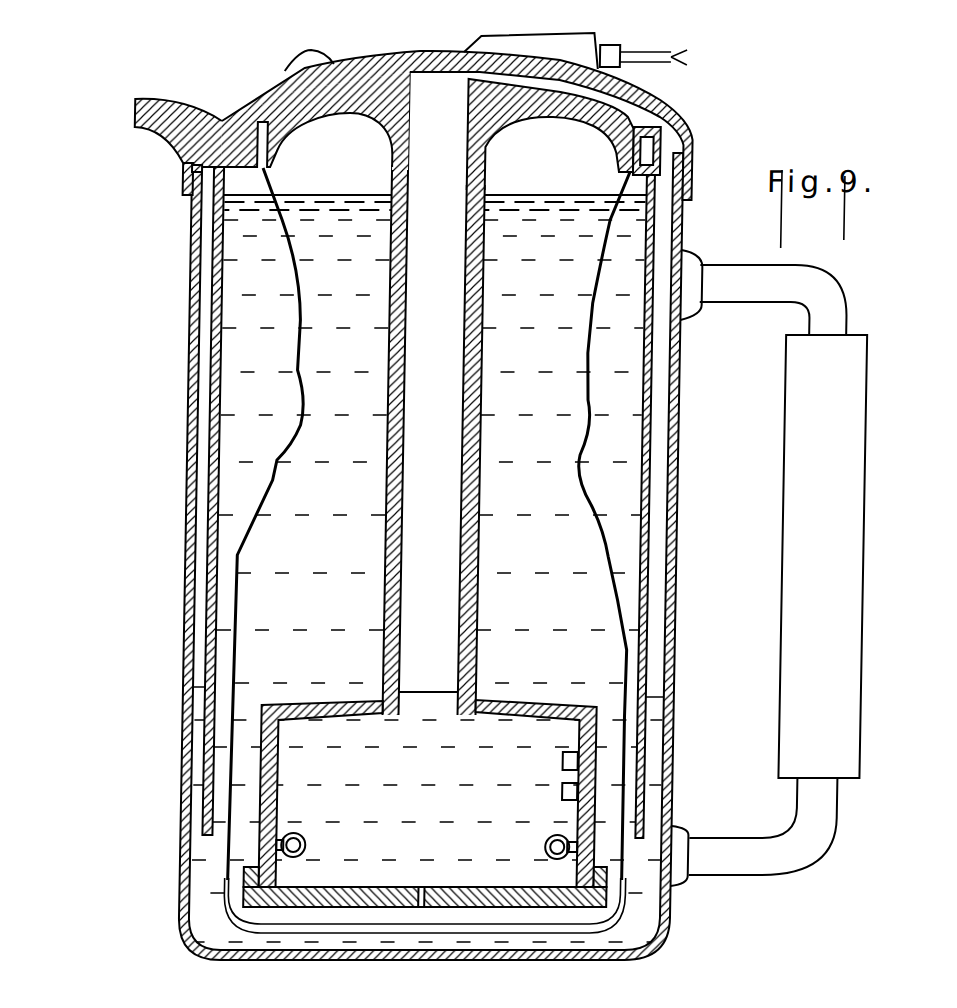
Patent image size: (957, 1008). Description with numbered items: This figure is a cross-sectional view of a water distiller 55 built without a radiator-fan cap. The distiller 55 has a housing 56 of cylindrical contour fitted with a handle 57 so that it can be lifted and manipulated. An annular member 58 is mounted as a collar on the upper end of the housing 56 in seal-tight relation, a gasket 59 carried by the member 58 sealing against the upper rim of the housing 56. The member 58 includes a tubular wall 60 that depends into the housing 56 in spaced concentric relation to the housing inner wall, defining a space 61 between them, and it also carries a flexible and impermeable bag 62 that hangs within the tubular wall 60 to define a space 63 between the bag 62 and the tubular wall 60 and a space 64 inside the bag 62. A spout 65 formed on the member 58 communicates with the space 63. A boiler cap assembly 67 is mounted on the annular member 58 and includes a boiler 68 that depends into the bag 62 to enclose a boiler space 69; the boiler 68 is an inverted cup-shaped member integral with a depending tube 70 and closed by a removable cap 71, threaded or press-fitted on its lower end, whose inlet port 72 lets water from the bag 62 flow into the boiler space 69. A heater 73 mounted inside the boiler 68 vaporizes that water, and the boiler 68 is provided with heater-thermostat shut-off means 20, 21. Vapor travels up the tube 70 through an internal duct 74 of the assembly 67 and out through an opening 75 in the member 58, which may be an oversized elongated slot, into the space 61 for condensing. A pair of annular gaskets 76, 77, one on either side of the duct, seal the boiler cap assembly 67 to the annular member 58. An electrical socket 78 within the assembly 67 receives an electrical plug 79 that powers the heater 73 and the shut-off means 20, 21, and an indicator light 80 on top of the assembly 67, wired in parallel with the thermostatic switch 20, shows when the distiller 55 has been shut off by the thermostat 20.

The distiller 55 is at (178, 385).
The housing 56 is at (197, 447).
The handle 57 is at (856, 485).
The annular member 58 is at (186, 147).
The gasket 59 is at (195, 172).
The tubular wall 60 is at (223, 282).
The space 61 is at (214, 253).
The flexible and impermeable bag 62 is at (305, 270).
The space 63 is at (257, 382).
The space 64 is at (340, 446).
The spout 65 is at (155, 98).
The boiler cap assembly 67 is at (389, 63).
The boiler 68 is at (547, 707).
The boiler space 69 is at (427, 773).
The tube 70 is at (481, 503).
The removable cap 71 is at (493, 892).
The inlet hole or port 72 is at (440, 890).
The heater 73 is at (323, 843).
The internal duct 74 is at (559, 76).
The opening 75 is at (697, 157).
The annular gasket 76 is at (700, 127).
The annular gasket 77 is at (669, 103).
The electrical socket 78 is at (588, 45).
The electrical plug 79 is at (620, 68).
The indicator light 80 is at (307, 73).
The thermostat 20 is at (576, 765).
The heater-thermostat shut-off means 21 is at (576, 797).